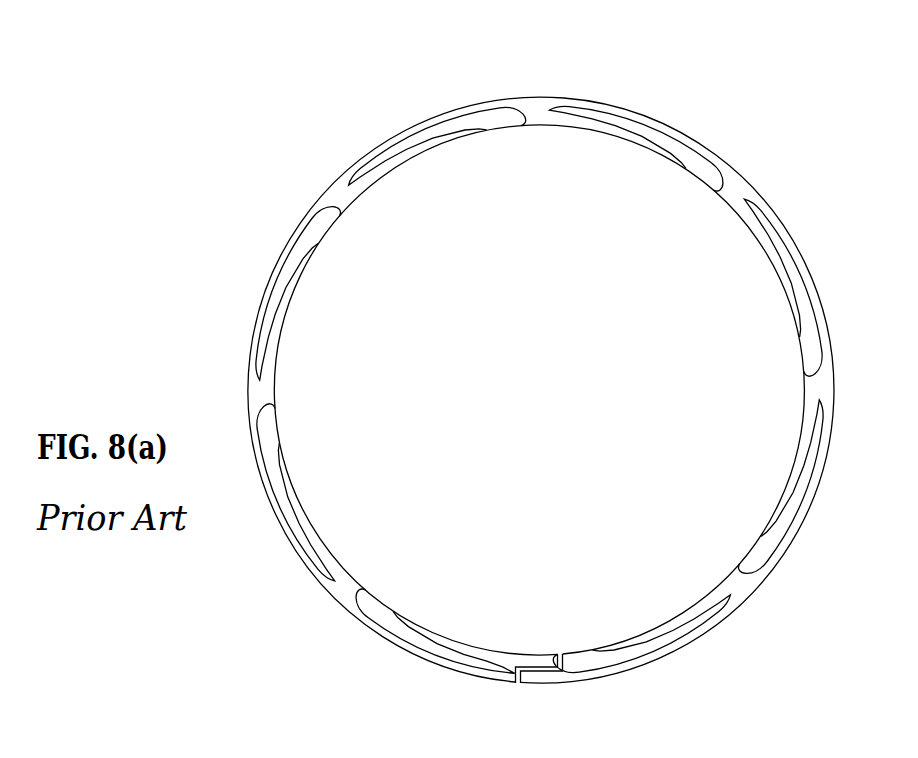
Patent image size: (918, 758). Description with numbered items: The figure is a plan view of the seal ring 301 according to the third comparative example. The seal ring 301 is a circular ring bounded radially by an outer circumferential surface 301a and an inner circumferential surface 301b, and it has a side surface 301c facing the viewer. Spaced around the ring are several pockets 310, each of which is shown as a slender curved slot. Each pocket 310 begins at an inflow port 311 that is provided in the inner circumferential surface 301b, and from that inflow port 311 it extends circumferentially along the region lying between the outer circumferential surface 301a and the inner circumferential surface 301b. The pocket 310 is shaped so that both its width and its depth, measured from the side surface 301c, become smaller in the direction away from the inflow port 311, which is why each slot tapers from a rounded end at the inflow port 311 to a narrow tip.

The seal ring 301 is at (539, 376).
The outer circumferential surface 301a is at (779, 223).
The inner circumferential surface 301b is at (755, 240).
The side surface 301c is at (528, 113).
The pocket 310 is at (626, 152).
The inflow port 311 is at (695, 195).